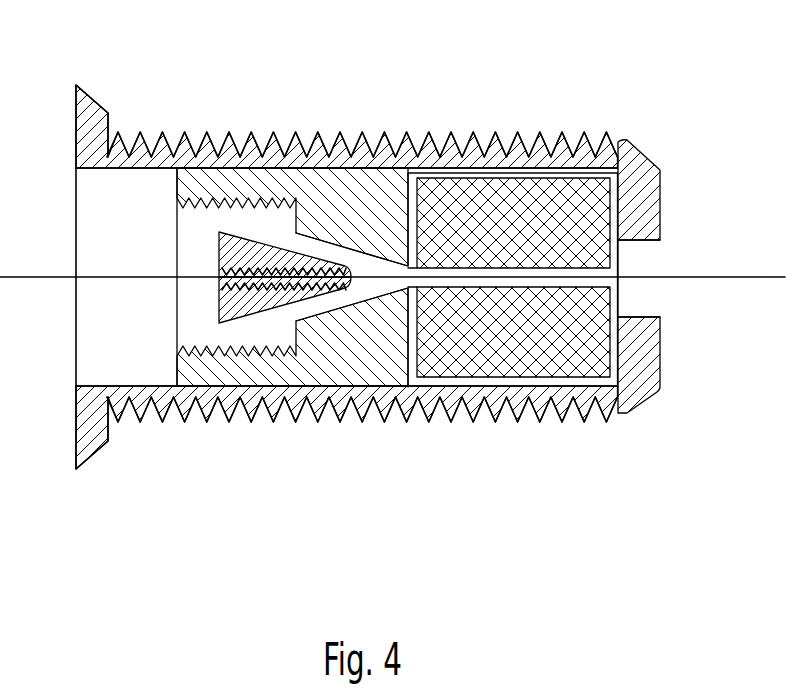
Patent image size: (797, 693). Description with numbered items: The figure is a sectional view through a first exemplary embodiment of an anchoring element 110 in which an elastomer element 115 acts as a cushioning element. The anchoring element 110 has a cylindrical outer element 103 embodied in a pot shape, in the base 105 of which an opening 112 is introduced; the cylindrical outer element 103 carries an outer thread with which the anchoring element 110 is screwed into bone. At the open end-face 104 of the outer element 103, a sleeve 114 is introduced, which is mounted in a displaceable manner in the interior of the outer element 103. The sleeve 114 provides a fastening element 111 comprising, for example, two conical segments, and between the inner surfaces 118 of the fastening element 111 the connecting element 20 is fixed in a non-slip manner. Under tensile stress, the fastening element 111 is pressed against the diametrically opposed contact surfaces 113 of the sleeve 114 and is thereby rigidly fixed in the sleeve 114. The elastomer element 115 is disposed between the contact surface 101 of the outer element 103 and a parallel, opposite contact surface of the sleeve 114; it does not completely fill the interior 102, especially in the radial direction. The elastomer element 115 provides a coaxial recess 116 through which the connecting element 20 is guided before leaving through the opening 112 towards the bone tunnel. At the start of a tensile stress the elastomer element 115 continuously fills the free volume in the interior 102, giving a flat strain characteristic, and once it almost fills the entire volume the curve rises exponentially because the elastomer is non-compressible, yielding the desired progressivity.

The anchoring element 110 is at (667, 49).
The connecting element 20 is at (759, 274).
The contact surface 101 is at (601, 218).
The interior 102 is at (547, 175).
The cylindrical outer element 103 is at (515, 400).
The open end-face 104 is at (92, 425).
The base 105 is at (648, 343).
The fastening element 111 is at (220, 252).
The opening 112 is at (648, 302).
The contact surfaces 113 is at (373, 259).
The sleeve 114 is at (223, 185).
The elastomer element 115 is at (455, 205).
The coaxial recess 116 is at (598, 273).
The inner surfaces 118 is at (220, 302).